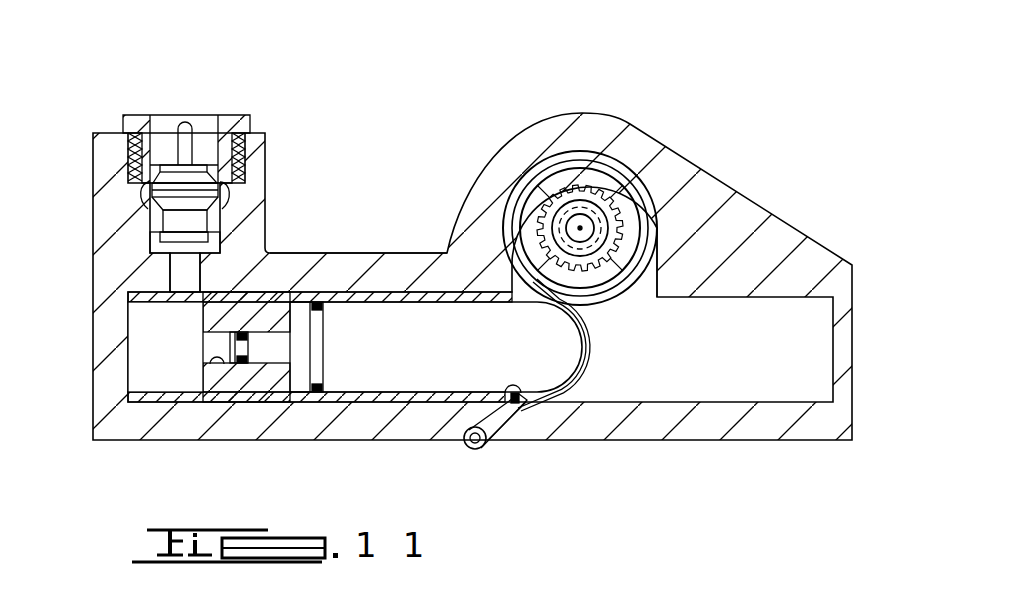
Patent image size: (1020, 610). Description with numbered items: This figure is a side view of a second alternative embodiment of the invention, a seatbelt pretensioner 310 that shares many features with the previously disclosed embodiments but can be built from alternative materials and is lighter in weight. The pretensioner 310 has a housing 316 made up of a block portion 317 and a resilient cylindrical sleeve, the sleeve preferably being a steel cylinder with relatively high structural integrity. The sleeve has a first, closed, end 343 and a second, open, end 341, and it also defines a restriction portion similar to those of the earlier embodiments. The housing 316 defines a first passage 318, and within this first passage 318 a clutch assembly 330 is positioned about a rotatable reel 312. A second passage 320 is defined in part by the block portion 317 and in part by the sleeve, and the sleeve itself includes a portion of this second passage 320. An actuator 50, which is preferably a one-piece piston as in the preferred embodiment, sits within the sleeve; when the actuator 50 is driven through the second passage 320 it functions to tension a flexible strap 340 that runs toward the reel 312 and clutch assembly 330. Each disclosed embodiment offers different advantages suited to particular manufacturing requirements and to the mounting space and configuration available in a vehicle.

The seatbelt pretensioner 310 is at (77, 132).
The rotatable reel 312 is at (581, 226).
The housing 316 is at (322, 213).
The block portion 317 is at (401, 253).
The first passage 318 is at (657, 281).
The second passage 320 is at (712, 378).
The clutch assembly 330 is at (654, 190).
The flexible strap 340 is at (583, 368).
The second, open, end 341 is at (531, 402).
The first, closed, end 343 is at (140, 404).
The actuator 50 is at (432, 368).